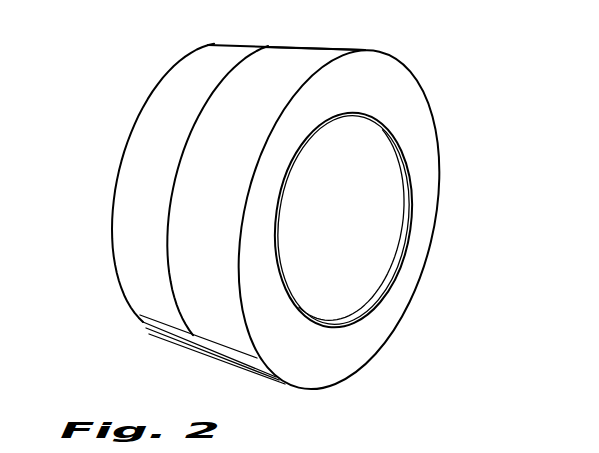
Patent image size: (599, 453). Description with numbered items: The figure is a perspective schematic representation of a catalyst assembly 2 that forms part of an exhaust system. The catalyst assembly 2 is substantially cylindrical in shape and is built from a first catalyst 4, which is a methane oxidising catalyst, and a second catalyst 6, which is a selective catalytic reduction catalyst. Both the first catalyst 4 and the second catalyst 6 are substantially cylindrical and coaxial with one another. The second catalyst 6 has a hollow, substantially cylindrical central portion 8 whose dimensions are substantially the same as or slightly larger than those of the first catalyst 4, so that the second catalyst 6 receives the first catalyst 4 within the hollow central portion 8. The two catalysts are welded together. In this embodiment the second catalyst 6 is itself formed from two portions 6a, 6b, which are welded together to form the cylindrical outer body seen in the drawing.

The catalyst assembly 2 is at (145, 183).
The first catalyst 4 is at (363, 267).
The second catalyst 6 is at (147, 321).
The portion of the second catalyst 6a is at (185, 80).
The portion of the second catalyst 6b is at (282, 62).
The hollow central portion 8 is at (293, 250).